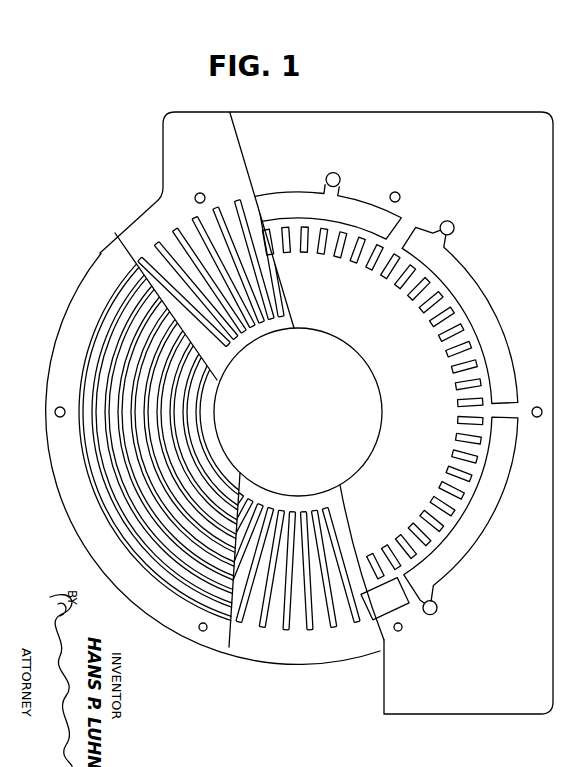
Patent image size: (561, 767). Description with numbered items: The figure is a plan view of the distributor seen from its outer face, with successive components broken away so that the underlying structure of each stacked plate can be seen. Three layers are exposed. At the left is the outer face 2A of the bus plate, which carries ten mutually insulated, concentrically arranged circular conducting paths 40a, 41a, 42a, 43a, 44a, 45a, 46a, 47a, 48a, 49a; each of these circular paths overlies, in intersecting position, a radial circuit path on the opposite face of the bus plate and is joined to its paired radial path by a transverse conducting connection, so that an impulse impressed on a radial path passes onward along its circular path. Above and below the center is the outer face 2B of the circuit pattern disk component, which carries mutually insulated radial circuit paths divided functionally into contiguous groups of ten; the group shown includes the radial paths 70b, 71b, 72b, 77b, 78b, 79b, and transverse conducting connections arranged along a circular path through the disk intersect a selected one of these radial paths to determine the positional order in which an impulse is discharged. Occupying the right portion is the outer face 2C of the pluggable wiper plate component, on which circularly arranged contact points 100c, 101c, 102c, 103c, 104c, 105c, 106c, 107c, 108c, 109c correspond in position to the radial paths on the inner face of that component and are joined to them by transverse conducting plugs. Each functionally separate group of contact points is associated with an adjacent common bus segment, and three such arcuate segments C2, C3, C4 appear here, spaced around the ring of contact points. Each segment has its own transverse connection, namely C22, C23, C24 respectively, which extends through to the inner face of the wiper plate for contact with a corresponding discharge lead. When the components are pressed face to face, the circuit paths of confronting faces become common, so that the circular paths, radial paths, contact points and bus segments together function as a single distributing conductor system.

The outer face of the bus plate 2A is at (266, 428).
The outer face of the circuit pattern disk component 2B is at (242, 376).
The outer face of the pluggable wiper plate component 2C is at (391, 397).
The circular path 40a is at (111, 302).
The circular path 41a is at (116, 320).
The circular path 42a is at (122, 338).
The circular path 43a is at (129, 357).
The circular path 44a is at (137, 378).
The circular path 45a is at (147, 397).
The circular path 46a is at (159, 420).
The circular path 47a is at (176, 443).
The circular path 48a is at (196, 460).
The circular path 49a is at (220, 475).
The radial path 70b is at (194, 216).
The radial path 71b is at (217, 206).
The radial path 72b is at (238, 201).
The radial path 77b is at (141, 262).
The radial path 78b is at (157, 244).
The radial path 79b is at (178, 228).
The common bus segment C2 is at (328, 200).
The common bus segment C3 is at (460, 302).
The common bus segment C4 is at (465, 519).
The transverse connection C22 is at (340, 179).
The transverse connection C23 is at (454, 228).
The transverse connection C24 is at (438, 609).
The contact point 100c is at (383, 276).
The contact point 101c is at (397, 287).
The contact point 102c is at (410, 299).
The contact point 103c is at (421, 311).
The contact point 104c is at (432, 325).
The contact point 105c is at (440, 340).
The contact point 106c is at (447, 355).
The contact point 107c is at (452, 371).
The contact point 108c is at (456, 388).
The contact point 109c is at (458, 404).